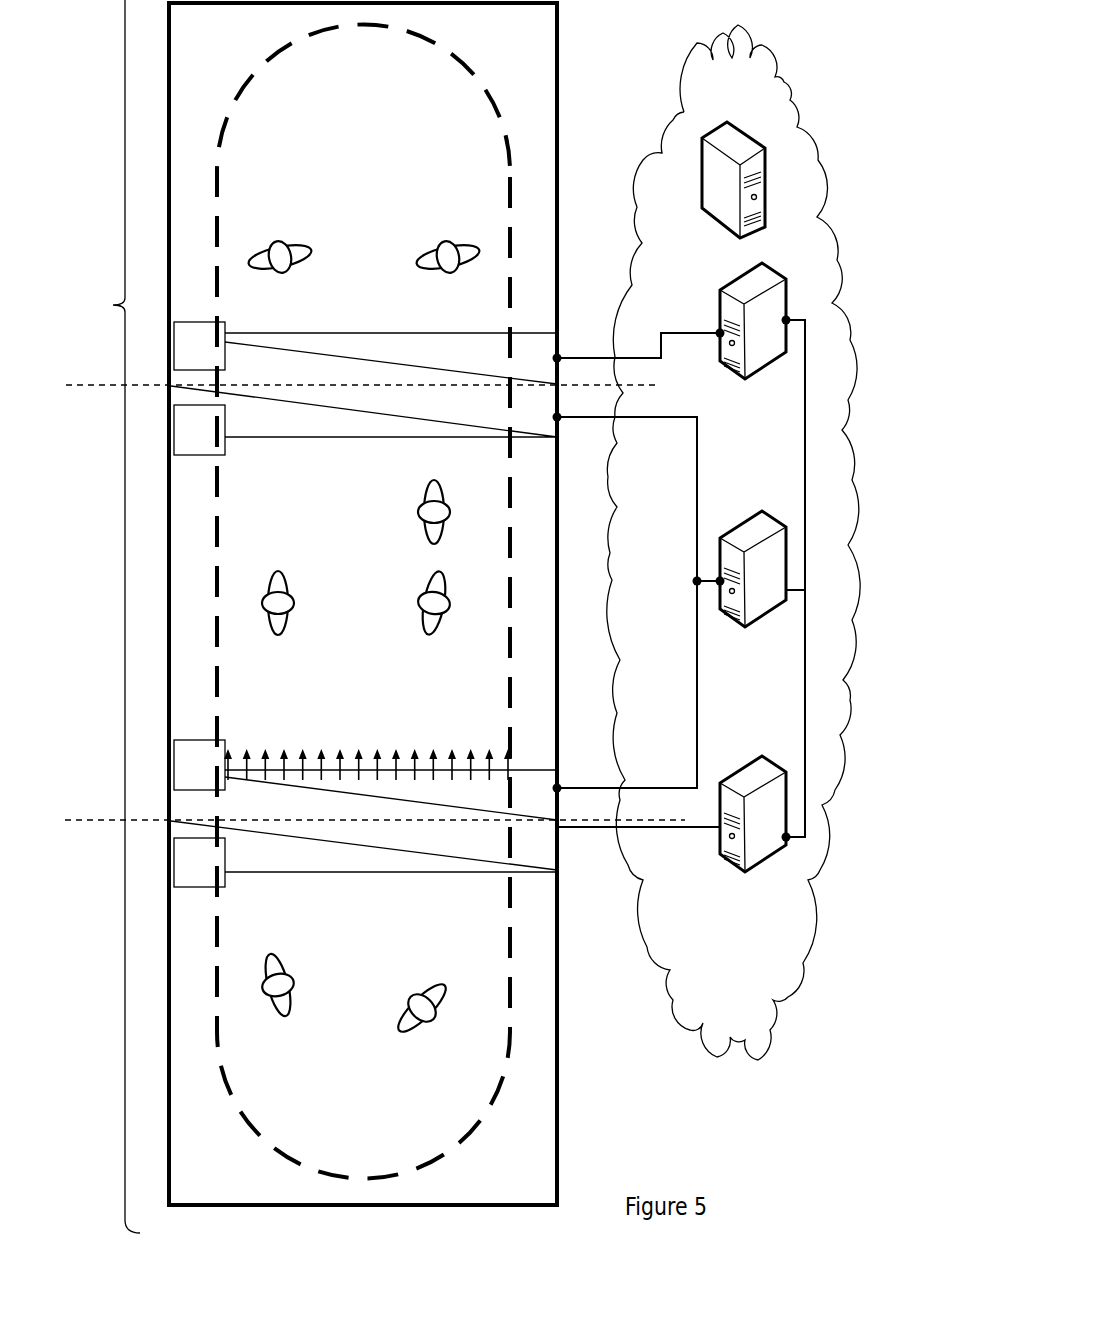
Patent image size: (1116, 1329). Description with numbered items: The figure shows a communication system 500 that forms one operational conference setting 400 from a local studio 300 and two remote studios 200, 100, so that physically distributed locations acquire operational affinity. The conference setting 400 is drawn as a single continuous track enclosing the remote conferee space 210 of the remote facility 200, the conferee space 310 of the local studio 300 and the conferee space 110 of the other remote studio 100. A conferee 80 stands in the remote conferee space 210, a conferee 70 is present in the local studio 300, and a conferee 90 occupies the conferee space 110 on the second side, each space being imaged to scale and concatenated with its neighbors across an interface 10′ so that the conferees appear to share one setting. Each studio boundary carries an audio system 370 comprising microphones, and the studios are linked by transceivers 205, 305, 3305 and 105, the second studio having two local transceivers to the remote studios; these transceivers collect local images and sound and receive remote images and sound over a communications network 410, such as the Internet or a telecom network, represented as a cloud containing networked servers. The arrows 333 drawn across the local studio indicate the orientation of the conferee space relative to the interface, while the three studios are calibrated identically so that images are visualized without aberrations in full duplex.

The system 500 is at (104, 616).
The first partition line 10′ is at (112, 385).
The operational conference setting 400 is at (280, 50).
The remote facility 200 is at (396, 153).
The conferee space 210 is at (369, 122).
The conferee 80 is at (462, 240).
The audio system 370 is at (199, 604).
The first zone signal line 205 is at (391, 358).
The transceiver 305 is at (364, 411).
The studio 300 is at (409, 603).
The conferee space 310 is at (330, 530).
The conferee 70 is at (450, 510).
The flow direction arrows 333 is at (398, 776).
The second zone lower signal line 3305 is at (391, 795).
The third zone signal line 105 is at (364, 846).
The remote studio 100 is at (403, 1058).
The conferee space 110 is at (421, 940).
The persons in third zone 90 is at (437, 1018).
The communications network 410 is at (648, 948).